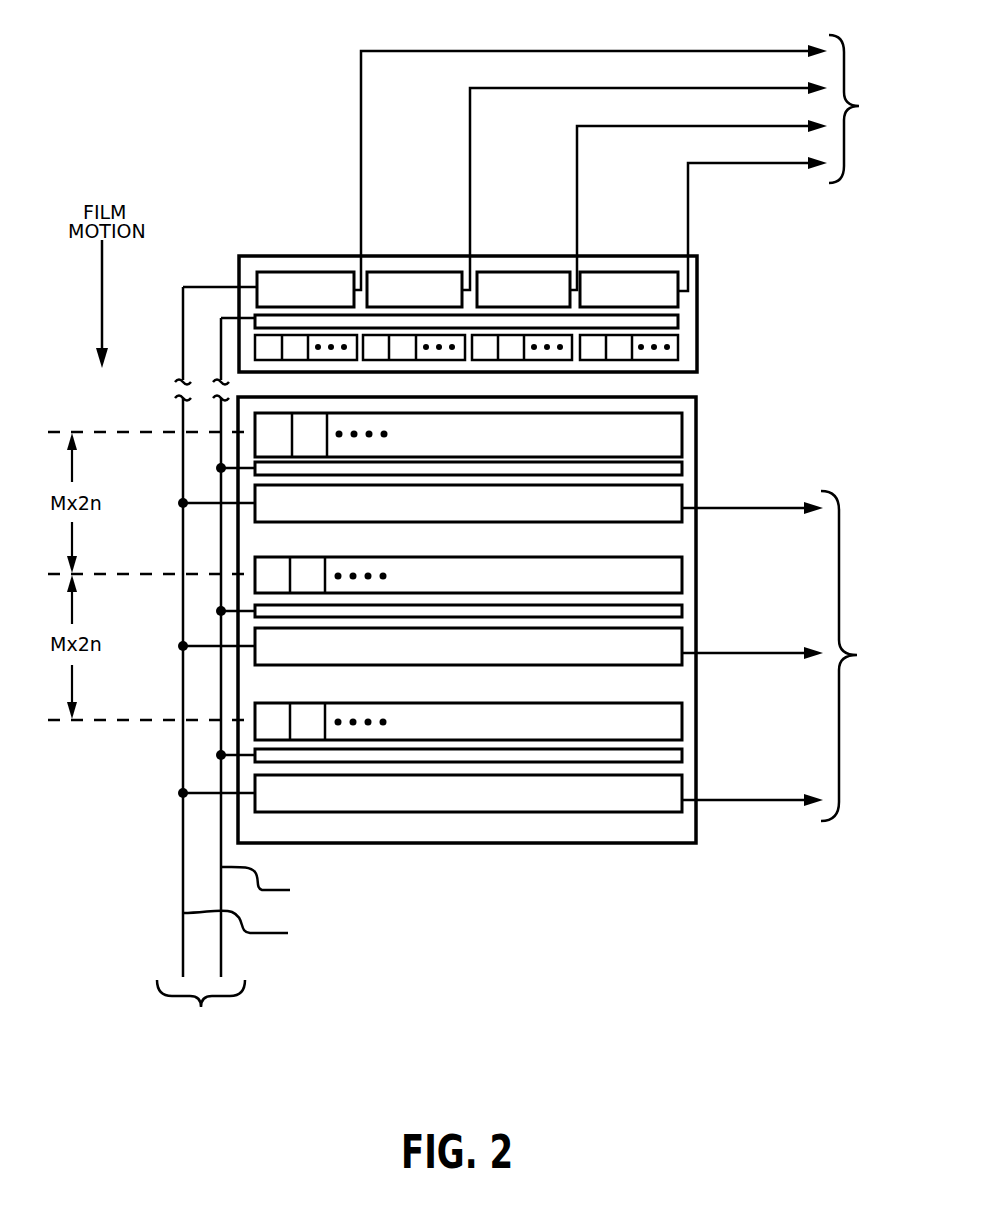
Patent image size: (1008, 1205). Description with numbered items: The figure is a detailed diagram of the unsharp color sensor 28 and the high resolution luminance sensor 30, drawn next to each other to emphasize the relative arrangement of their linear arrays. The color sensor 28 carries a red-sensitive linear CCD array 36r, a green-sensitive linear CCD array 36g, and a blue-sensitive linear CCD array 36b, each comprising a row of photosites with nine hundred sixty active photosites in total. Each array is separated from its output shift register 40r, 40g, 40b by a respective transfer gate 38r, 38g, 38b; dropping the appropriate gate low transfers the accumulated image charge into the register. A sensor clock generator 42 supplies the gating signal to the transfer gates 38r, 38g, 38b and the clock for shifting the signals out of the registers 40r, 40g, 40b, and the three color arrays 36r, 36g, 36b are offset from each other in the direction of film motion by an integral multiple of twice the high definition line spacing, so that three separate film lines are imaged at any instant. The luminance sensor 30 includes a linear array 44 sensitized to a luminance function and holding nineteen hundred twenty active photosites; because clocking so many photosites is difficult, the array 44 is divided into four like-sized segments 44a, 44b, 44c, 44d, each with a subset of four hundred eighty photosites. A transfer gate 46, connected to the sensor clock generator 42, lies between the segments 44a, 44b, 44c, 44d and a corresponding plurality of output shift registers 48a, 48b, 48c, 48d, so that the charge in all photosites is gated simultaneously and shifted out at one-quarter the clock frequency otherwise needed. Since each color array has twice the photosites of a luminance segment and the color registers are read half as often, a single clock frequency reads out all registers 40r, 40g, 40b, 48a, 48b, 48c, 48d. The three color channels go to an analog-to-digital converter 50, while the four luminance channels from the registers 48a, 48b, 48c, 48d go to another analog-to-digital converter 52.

The color sensor 28 is at (563, 845).
The luminance sensor 30 is at (276, 255).
The red-sensitive linear CCD array 36r is at (682, 433).
The green-sensitive linear CCD array 36g is at (682, 575).
The blue-sensitive linear CCD array 36b is at (682, 725).
The transfer gate 38r is at (682, 471).
The transfer gate 38g is at (682, 617).
The transfer gate 38b is at (682, 763).
The output shift register 40r is at (378, 523).
The output shift register 40g is at (363, 666).
The output shift register 40b is at (347, 813).
The sensor clock generator 42 is at (310, 685).
The linear array 44 is at (527, 363).
The segment 44a is at (292, 361).
The segment 44b is at (403, 361).
The segment 44c is at (510, 361).
The segment 44d is at (618, 361).
The transfer gate 46 is at (678, 325).
The output shift register 48a is at (320, 285).
The output shift register 48b is at (418, 284).
The output shift register 48c is at (528, 284).
The output shift register 48d is at (634, 284).
The analog-to-digital converter 50 is at (899, 641).
The analog-to-digital converter 52 is at (895, 91).